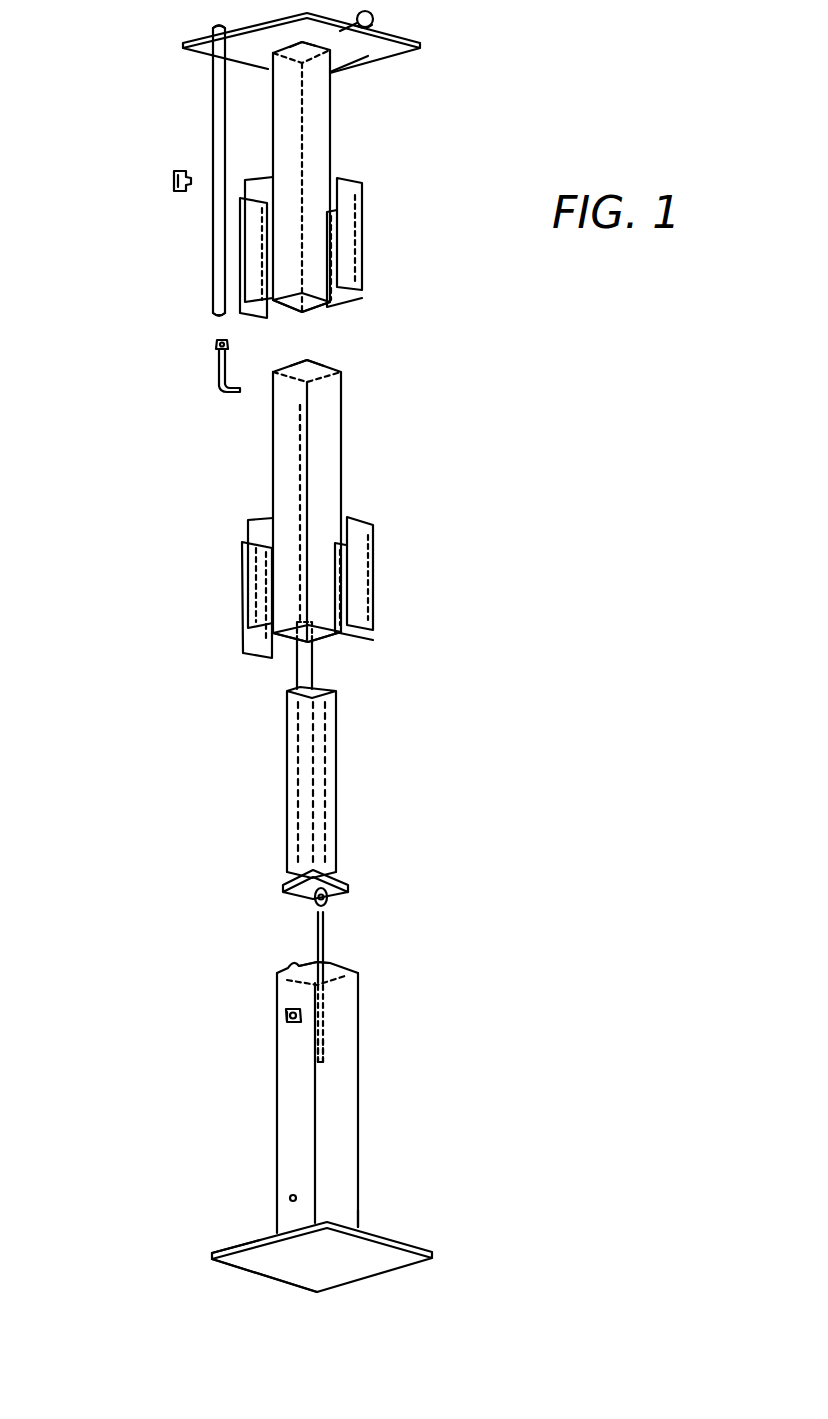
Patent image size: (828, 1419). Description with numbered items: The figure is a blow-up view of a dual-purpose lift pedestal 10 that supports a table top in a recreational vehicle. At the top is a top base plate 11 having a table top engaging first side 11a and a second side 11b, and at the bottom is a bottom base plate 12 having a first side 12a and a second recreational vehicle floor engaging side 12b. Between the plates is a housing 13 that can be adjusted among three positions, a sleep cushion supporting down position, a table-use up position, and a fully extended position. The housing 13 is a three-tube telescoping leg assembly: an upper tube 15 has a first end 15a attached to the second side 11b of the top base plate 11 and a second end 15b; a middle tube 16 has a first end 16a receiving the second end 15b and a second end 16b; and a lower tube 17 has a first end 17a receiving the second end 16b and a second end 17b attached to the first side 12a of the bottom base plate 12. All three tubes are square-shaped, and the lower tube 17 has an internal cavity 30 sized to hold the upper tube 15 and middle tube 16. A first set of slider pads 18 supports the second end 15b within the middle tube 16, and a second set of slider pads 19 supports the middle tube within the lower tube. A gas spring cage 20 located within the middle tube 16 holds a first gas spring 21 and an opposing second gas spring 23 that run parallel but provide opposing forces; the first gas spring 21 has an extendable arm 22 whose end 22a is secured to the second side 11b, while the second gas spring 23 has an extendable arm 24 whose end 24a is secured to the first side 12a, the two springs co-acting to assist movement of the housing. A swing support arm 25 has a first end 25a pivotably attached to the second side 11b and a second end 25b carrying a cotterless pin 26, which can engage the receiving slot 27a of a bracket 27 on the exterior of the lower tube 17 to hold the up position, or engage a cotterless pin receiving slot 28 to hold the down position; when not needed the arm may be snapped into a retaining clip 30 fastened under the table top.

The dual-purpose lift pedestal 10 is at (516, 38).
The top base plate 11 is at (188, 44).
The table top engaging first side 11a is at (398, 38).
The second side 11b is at (367, 55).
The bottom base plate 12 is at (432, 1250).
The first side 12a is at (248, 1240).
The second recreational vehicle floor engaging side 12b is at (273, 1258).
The housing 13 is at (483, 488).
The upper tube 15 is at (331, 137).
The first end 15a is at (314, 42).
The second end 15b is at (311, 312).
The middle tube 16 is at (342, 473).
The first end 16a is at (341, 373).
The second end 16b is at (322, 650).
The lower tube 17 is at (359, 1068).
The first end 17a is at (346, 972).
The second end 17b is at (360, 1227).
The first set of slider pads 18 is at (357, 303).
The second set of slider pads 19 is at (250, 638).
The gas spring cage 20 is at (337, 785).
The first gas spring 21 is at (297, 673).
The extendable arm 22 is at (297, 453).
The end 22a is at (303, 418).
The second gas spring 23 is at (329, 896).
The extendable arm 24 is at (313, 930).
The end 24a is at (330, 1060).
The swing support arm 25 is at (212, 242).
The first end 25a is at (218, 30).
The second end 25b is at (213, 313).
The cotterless pin 26 is at (220, 383).
The bracket 27 is at (287, 1007).
The receiving slot 27a is at (287, 1020).
The cotterless pin receiving slot 28 is at (290, 1195).
The internal cavity 30 is at (170, 182).